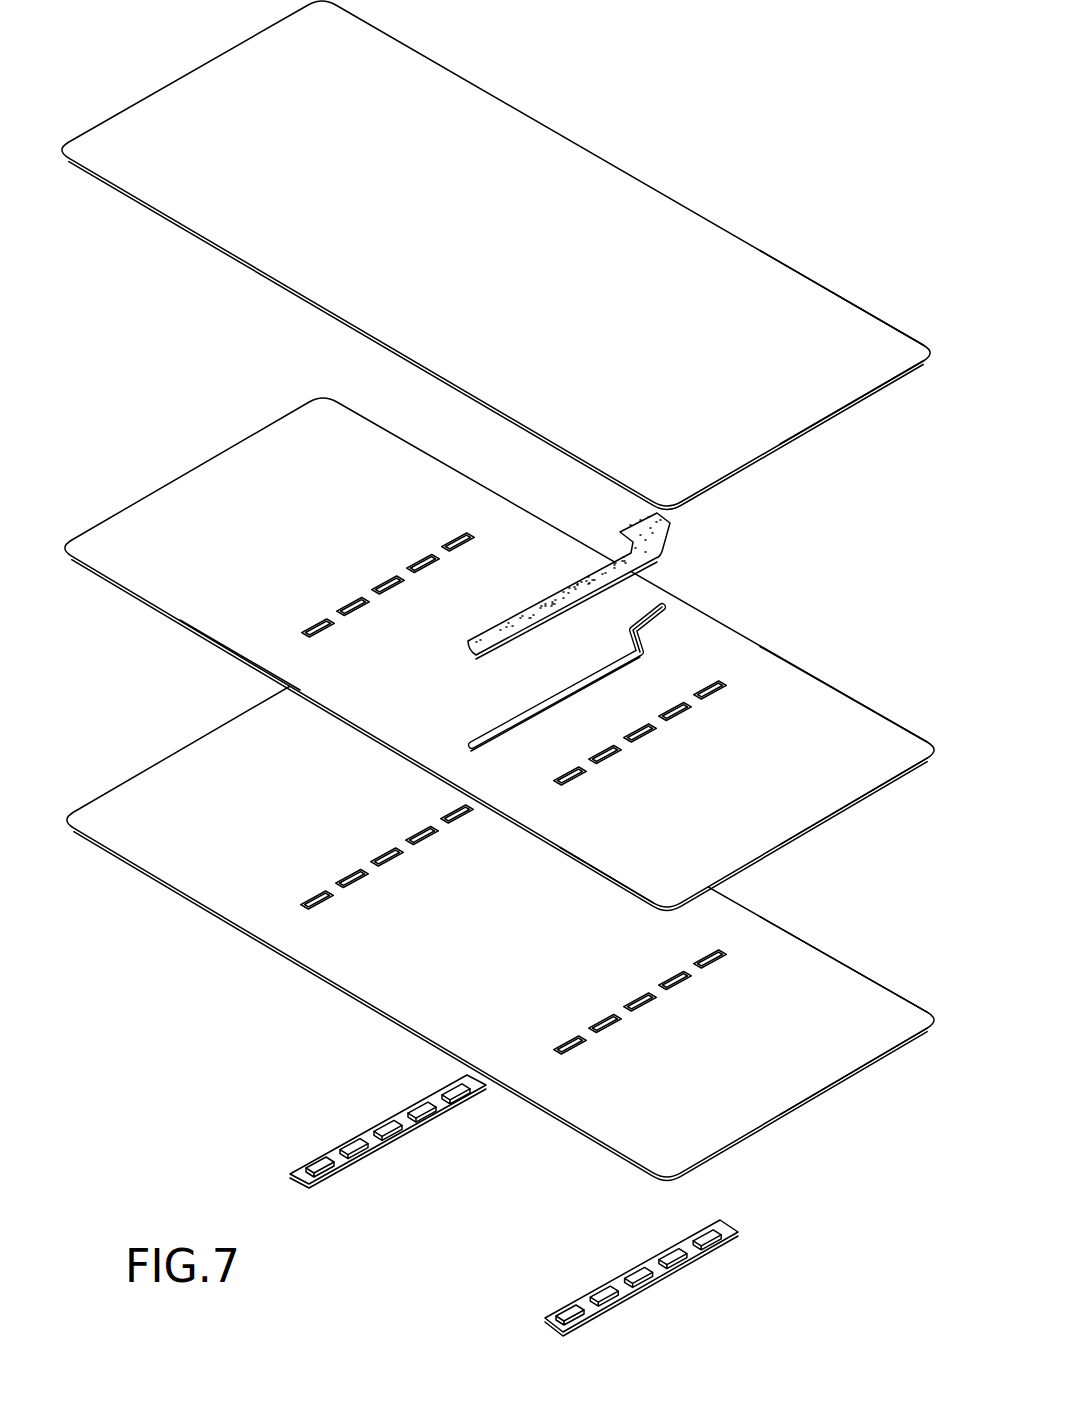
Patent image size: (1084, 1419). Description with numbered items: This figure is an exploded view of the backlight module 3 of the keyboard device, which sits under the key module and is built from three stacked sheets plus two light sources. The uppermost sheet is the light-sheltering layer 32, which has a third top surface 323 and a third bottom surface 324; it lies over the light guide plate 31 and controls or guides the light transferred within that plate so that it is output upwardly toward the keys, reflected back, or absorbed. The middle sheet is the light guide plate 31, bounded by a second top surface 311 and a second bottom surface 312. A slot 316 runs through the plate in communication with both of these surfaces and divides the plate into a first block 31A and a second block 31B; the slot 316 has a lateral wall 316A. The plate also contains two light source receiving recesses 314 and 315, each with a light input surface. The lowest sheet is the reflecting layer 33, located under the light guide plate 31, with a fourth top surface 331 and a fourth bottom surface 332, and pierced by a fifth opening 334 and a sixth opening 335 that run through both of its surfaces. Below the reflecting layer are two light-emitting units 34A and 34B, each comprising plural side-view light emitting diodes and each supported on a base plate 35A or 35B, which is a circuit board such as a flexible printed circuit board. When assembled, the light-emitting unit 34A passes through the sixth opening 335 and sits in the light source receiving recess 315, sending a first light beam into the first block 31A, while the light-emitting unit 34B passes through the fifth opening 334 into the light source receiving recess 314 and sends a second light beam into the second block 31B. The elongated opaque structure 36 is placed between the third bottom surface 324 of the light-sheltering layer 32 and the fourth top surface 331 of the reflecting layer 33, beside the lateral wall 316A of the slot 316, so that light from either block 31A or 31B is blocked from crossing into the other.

The backlight module 3 is at (842, 139).
The light-sheltering layer 32 is at (168, 108).
The third top surface 323 is at (803, 298).
The third bottom surface 324 is at (832, 425).
The light guide plate 31 is at (168, 503).
The second top surface 311 is at (803, 695).
The second bottom surface 312 is at (832, 820).
The first block 31A is at (670, 785).
The second block 31B is at (405, 632).
The first light source receiving recess 314 is at (422, 558).
The second light source receiving recess 315 is at (672, 718).
The slot 316 is at (515, 712).
The lateral wall 316A is at (606, 668).
The opaque structure 36 is at (540, 598).
The reflecting layer 33 is at (168, 775).
The fourth top surface 331 is at (803, 967).
The fourth bottom surface 332 is at (832, 1090).
The fifth opening 334 is at (432, 842).
The sixth opening 335 is at (683, 985).
The light-emitting unit 34A is at (675, 1245).
The light-emitting unit 34B is at (425, 1105).
The base plate 35A is at (675, 1270).
The base plate 35B is at (425, 1125).